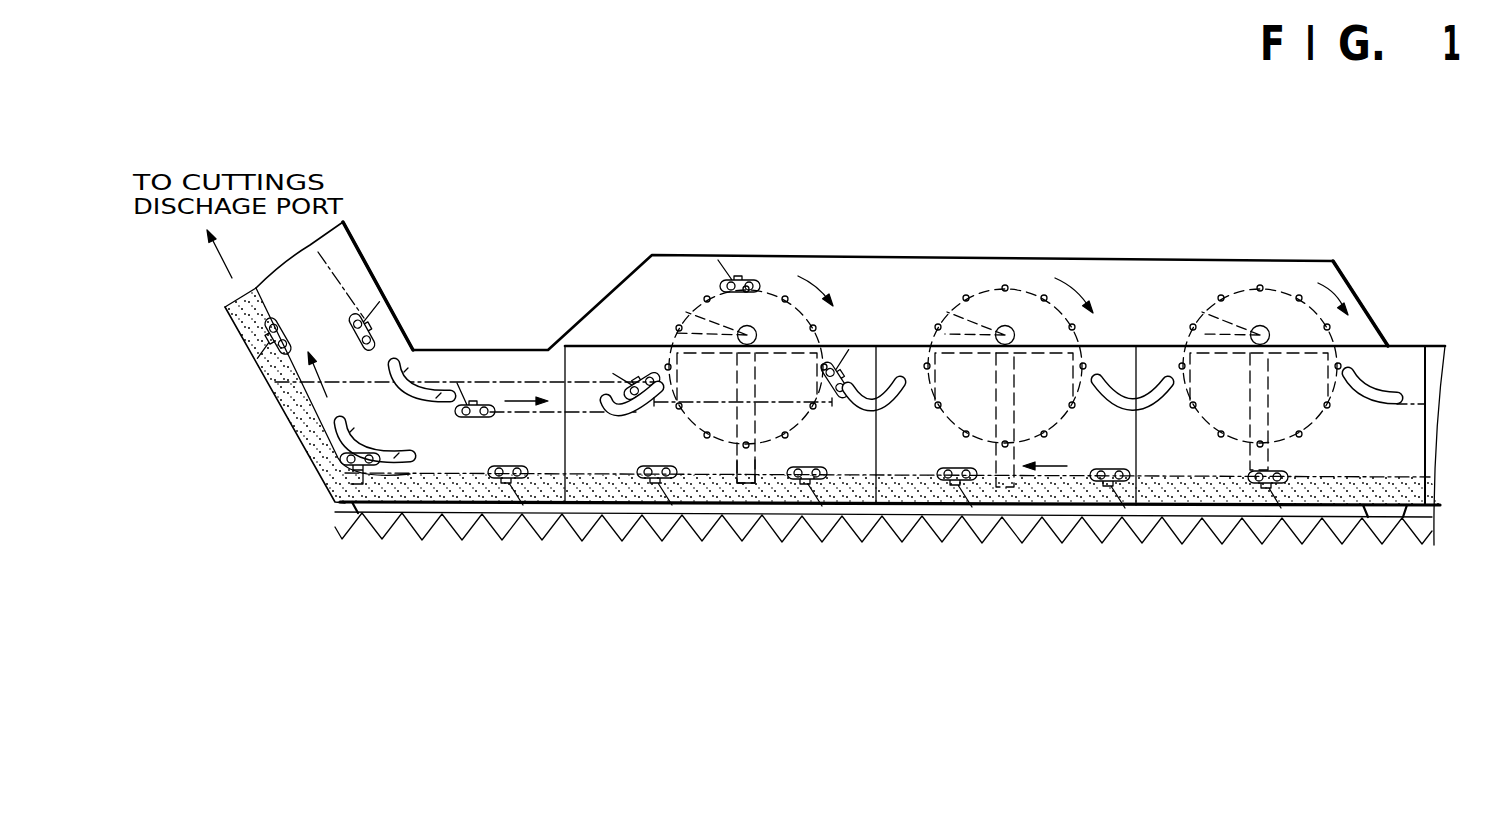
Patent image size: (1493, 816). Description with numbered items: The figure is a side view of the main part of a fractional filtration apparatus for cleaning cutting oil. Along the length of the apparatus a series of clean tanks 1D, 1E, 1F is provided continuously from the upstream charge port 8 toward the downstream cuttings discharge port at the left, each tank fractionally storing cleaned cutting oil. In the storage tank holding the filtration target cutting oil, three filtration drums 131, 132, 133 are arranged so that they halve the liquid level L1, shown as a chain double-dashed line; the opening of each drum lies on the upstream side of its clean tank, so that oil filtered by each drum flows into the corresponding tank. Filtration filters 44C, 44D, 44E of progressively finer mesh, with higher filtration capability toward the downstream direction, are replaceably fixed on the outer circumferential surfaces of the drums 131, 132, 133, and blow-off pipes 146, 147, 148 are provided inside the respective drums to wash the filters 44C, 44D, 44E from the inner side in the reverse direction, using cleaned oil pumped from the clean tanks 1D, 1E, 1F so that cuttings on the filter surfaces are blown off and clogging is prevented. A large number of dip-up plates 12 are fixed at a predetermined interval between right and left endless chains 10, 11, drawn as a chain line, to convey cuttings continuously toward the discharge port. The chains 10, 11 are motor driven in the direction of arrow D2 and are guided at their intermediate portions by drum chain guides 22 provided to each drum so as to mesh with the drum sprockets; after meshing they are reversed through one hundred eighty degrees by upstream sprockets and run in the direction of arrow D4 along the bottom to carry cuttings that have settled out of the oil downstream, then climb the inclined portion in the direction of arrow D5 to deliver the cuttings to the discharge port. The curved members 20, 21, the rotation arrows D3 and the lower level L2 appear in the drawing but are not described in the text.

The endless chain 10 is at (832, 373).
The endless chain 11 is at (329, 274).
The dip-up plate 12 is at (364, 308).
The curved cutter blade 20 is at (416, 380).
The curved cutter blade 21 is at (402, 462).
The drum chain guide 22 is at (618, 388).
The arrow D2 is at (518, 398).
The direction of drum rotation D3 is at (831, 298).
The arrow D4 is at (1050, 467).
The arrow D5 is at (300, 380).
The liquid level L1 is at (624, 385).
The lower conveyor level L2 is at (728, 398).
The clean tank 1F is at (856, 346).
The clean tank 1E is at (1120, 346).
The clean tank 1D is at (1360, 346).
The charge port 8 is at (1423, 344).
The filtration filter 44E is at (700, 292).
The filtration filter 44D is at (960, 312).
The filtration filter 44C is at (1215, 300).
The blow-off pipe 148 is at (750, 326).
The blow-off pipe 147 is at (1007, 326).
The blow-off pipe 146 is at (1258, 326).
The filtration drum 133 is at (685, 315).
The filtration drum 132 is at (965, 302).
The filtration drum 131 is at (1282, 298).